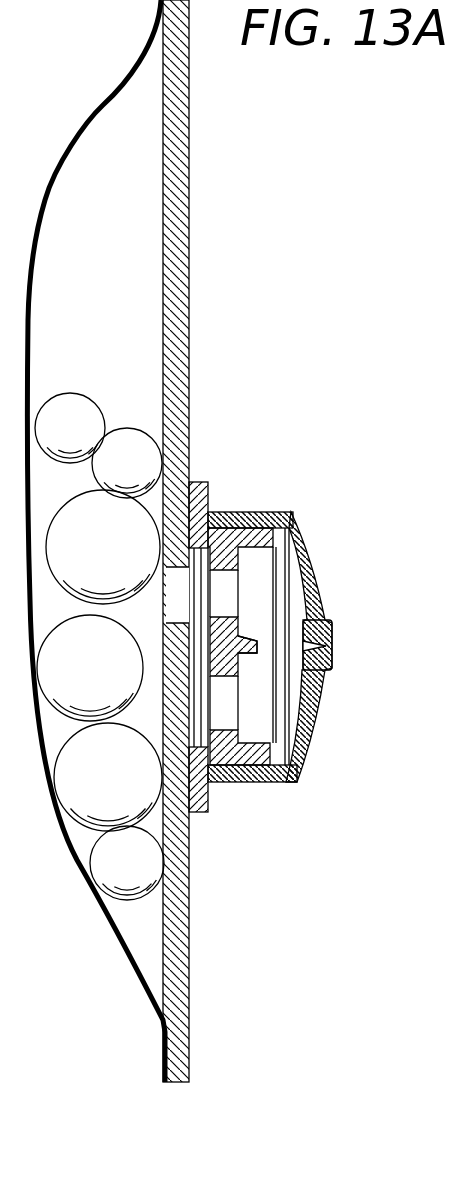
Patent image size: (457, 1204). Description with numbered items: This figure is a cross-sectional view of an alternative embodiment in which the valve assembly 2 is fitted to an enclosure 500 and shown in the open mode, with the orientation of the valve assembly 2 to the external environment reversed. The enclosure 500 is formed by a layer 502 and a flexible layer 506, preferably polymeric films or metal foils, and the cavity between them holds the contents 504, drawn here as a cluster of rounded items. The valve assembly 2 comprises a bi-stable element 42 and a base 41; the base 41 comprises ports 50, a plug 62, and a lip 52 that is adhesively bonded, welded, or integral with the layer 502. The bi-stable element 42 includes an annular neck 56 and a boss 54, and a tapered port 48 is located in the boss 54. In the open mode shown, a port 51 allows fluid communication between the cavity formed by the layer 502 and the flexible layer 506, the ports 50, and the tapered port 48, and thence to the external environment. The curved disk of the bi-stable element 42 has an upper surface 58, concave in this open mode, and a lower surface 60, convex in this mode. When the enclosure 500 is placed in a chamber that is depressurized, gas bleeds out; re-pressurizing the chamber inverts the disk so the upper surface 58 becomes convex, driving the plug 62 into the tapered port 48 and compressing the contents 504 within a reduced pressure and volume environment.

The valve assembly 2 is at (276, 826).
The base 41 is at (210, 477).
The bi-stable element 42 is at (300, 520).
The tapered port 48 is at (312, 646).
The ports 50 is at (286, 643).
The port 51 is at (291, 578).
The lip 52 is at (209, 808).
The boss 54 is at (333, 667).
The annular neck 56 is at (297, 776).
The upper surface 58 is at (175, 597).
The lower surface 60 is at (302, 732).
The plug 62 is at (258, 653).
The enclosure 500 is at (183, 541).
The layer 502 is at (189, 311).
The contents 504 is at (137, 440).
The flexible layer 506 is at (97, 123).